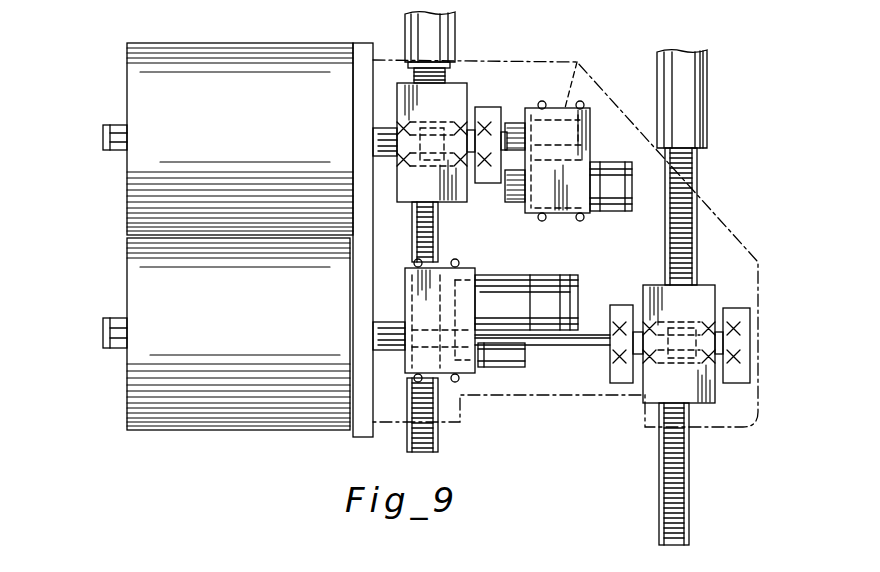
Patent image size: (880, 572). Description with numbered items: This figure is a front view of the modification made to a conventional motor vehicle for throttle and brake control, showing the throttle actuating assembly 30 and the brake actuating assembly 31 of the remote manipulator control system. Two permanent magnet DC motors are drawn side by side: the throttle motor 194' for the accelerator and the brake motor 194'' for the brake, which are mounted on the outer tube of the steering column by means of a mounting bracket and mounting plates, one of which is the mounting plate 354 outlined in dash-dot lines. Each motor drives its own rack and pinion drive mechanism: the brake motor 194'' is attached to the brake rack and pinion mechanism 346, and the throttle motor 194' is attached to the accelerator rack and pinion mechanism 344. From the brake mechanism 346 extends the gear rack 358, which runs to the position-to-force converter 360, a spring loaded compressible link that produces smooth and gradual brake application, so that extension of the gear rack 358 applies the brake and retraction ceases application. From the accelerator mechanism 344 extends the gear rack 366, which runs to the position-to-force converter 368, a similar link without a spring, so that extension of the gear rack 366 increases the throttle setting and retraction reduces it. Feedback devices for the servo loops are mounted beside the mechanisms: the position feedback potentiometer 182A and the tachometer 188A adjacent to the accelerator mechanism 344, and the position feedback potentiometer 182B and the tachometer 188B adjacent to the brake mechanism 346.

The throttle actuating assembly 30 is at (104, 380).
The brake actuating assembly 31 is at (104, 178).
The throttle motor 194' is at (238, 356).
The brake motor 194'' is at (240, 126).
The gear rack 358 is at (413, 78).
The position-to-force converter 360 is at (456, 38).
The brake rack and pinion drive mechanism 346 is at (456, 103).
The brake position feedback potentiometer 182B is at (580, 63).
The brake tachometer 188B is at (610, 213).
The position-to-force converter 368 is at (708, 122).
The gear rack 366 is at (685, 218).
The mounting plate 354 is at (760, 262).
The position feedback potentiometer 182A is at (515, 368).
The accelerator tachometer 188A is at (530, 275).
The accelerator rack and pinion drive mechanism 344 is at (700, 405).